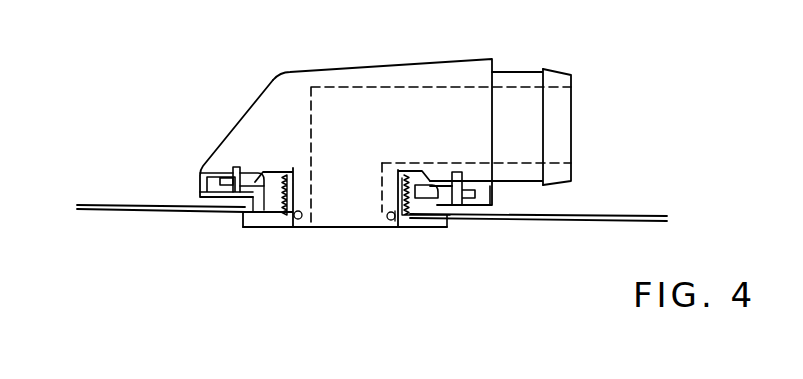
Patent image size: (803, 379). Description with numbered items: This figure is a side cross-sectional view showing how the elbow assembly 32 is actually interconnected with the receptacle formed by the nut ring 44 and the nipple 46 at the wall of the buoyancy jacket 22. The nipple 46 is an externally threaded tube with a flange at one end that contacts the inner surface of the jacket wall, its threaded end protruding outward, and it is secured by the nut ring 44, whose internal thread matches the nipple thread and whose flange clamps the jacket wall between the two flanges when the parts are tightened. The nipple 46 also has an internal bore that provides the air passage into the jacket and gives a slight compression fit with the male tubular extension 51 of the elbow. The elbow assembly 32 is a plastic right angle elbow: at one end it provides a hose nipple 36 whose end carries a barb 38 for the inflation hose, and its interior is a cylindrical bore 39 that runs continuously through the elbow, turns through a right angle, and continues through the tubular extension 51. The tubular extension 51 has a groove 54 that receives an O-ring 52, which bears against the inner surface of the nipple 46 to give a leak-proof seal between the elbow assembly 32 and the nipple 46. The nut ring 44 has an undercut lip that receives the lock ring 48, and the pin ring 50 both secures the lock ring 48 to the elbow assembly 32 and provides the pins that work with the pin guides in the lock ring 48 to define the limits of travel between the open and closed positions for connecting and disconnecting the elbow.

The buoyancy jacket 22 is at (132, 203).
The elbow assembly 32 is at (268, 125).
The hose nipple 36 is at (522, 80).
The barb 38 is at (557, 70).
The cylindrical bore 39 is at (523, 163).
The nut ring 44 is at (248, 202).
The nipple 46 is at (275, 220).
The lock ring 48 is at (250, 168).
The pin ring 50 is at (200, 188).
The male tubular extension 51 is at (388, 187).
The O-ring 52 is at (388, 219).
The groove 54 is at (396, 222).